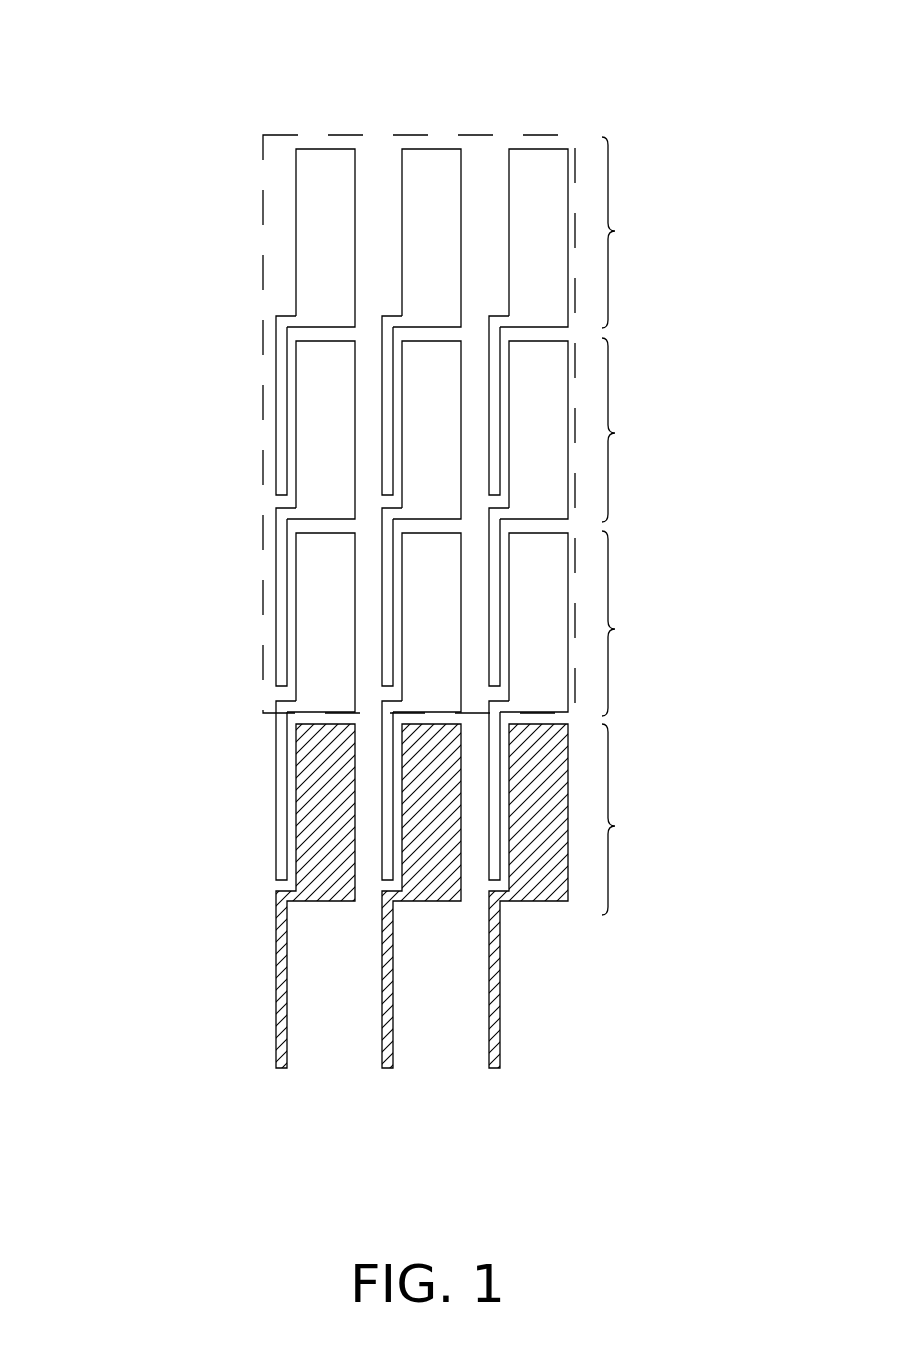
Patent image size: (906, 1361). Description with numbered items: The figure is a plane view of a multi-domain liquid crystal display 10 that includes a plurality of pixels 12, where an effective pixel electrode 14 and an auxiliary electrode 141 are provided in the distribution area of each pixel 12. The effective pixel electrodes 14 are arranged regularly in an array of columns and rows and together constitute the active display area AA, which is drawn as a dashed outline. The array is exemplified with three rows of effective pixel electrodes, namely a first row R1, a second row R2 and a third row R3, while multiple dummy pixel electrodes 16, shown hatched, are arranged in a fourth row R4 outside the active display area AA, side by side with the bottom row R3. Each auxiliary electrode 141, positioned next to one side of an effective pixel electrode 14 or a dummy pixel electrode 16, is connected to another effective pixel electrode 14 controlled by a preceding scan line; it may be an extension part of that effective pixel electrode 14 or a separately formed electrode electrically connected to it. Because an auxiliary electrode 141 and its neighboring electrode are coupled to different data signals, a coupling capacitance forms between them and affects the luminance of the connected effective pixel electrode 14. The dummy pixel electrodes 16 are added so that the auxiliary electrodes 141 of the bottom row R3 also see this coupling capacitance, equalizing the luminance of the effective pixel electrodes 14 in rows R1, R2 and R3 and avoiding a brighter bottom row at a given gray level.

The multi-domain liquid crystal display 10 is at (791, 49).
The pixel 12 is at (323, 149).
The active display area AA is at (493, 135).
The effective pixel electrode 14 is at (313, 243).
The auxiliary electrode 141 is at (282, 393).
The dummy pixel electrode 16 is at (313, 855).
The first row R1 is at (634, 232).
The second row R2 is at (634, 430).
The third row R3 is at (634, 623).
The fourth row R4 is at (634, 819).